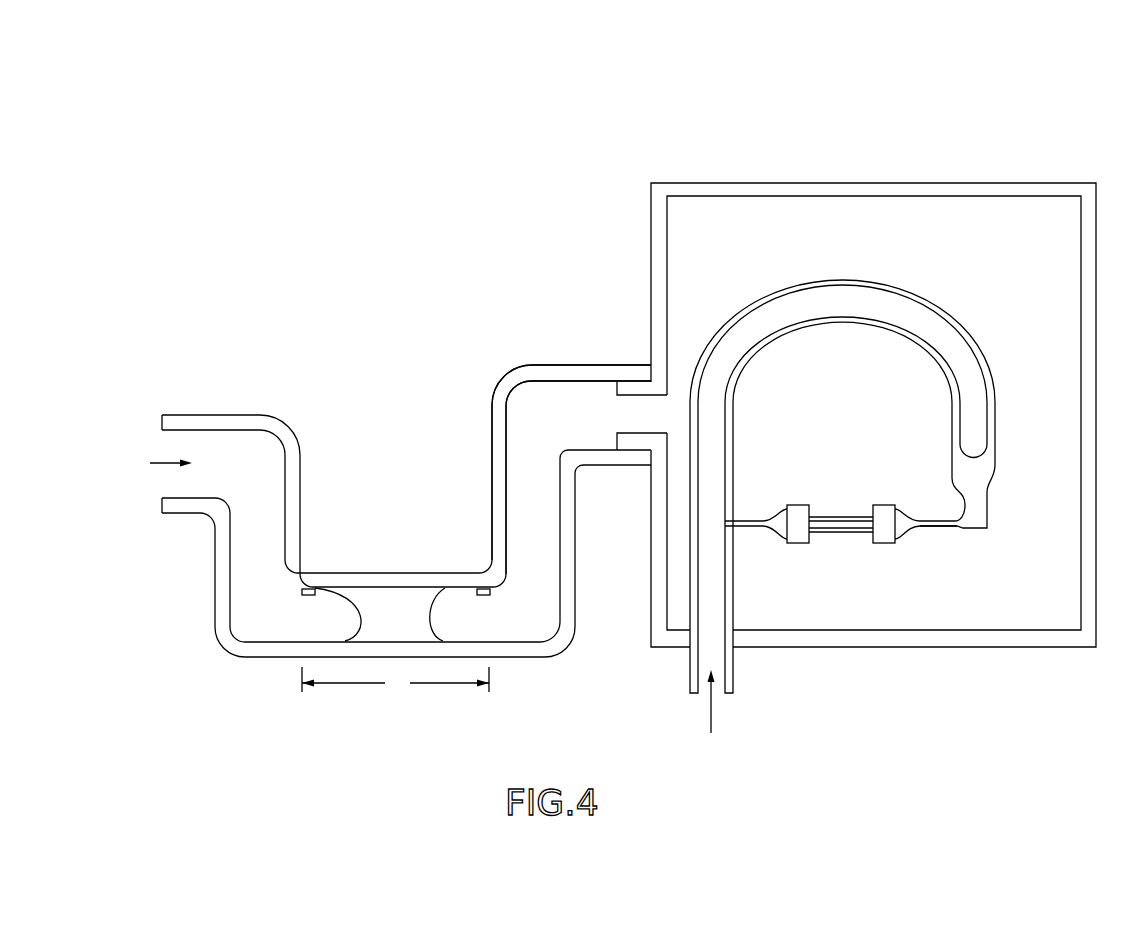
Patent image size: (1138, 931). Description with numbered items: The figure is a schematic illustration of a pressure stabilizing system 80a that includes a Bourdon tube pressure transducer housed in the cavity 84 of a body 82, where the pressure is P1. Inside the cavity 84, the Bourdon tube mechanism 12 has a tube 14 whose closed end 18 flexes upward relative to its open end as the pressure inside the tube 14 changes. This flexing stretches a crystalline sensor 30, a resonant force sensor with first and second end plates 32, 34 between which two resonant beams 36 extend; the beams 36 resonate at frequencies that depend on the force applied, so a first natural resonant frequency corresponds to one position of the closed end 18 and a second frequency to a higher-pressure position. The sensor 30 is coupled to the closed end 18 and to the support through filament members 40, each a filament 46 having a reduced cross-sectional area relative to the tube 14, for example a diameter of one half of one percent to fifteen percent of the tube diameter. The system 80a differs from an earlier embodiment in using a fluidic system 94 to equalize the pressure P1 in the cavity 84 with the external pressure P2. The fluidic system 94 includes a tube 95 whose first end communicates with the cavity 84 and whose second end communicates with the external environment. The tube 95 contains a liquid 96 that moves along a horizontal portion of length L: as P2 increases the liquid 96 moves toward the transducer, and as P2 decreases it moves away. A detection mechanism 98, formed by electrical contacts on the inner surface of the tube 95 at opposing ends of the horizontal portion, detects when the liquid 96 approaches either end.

The pressure stabilizing system 80a is at (892, 82).
The body 82 is at (975, 183).
The cavity 84 is at (731, 237).
The Bourdon tube mechanism 12 is at (881, 464).
The tube 14 is at (841, 279).
The closed end 18 is at (973, 512).
The crystalline sensor 30 is at (850, 523).
The first end plate 32 is at (890, 504).
The second end plate 34 is at (801, 504).
The resonant beams 36 is at (840, 515).
The filament 46 is at (750, 519).
The filament member 40 is at (757, 545).
The fluidic system 94 is at (381, 510).
The tube 95 is at (493, 397).
The liquid 96 is at (398, 610).
The detection mechanism 98 is at (303, 597).